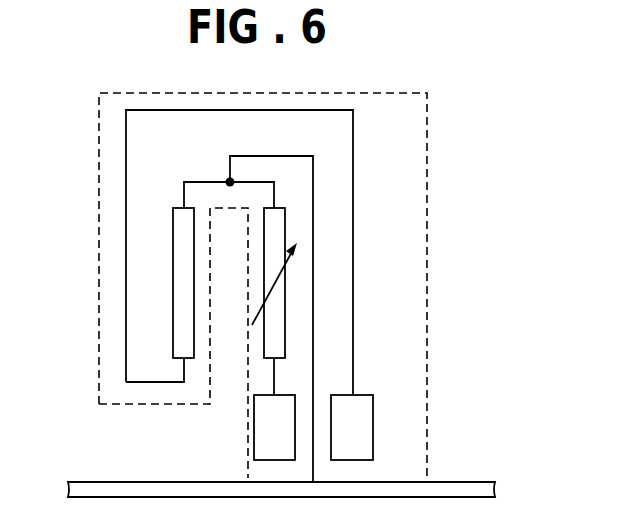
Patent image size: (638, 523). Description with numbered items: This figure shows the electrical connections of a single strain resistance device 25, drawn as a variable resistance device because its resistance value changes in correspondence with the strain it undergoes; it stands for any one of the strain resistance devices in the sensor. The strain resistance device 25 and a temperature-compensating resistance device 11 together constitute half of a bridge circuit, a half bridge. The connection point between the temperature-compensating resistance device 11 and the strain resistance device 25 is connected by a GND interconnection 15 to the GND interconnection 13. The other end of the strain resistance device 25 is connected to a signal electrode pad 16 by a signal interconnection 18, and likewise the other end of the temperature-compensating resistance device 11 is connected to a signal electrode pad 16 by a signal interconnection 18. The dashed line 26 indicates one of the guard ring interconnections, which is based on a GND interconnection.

The temperature-compensating resistance device 11 is at (180, 293).
The GND interconnection 13 is at (464, 490).
The GND interconnection 15 is at (238, 155).
The signal electrode pad 16 is at (265, 432).
The signal interconnection 18 is at (123, 220).
The strain resistance device 25 is at (277, 232).
The dashed line 26 is at (429, 222).